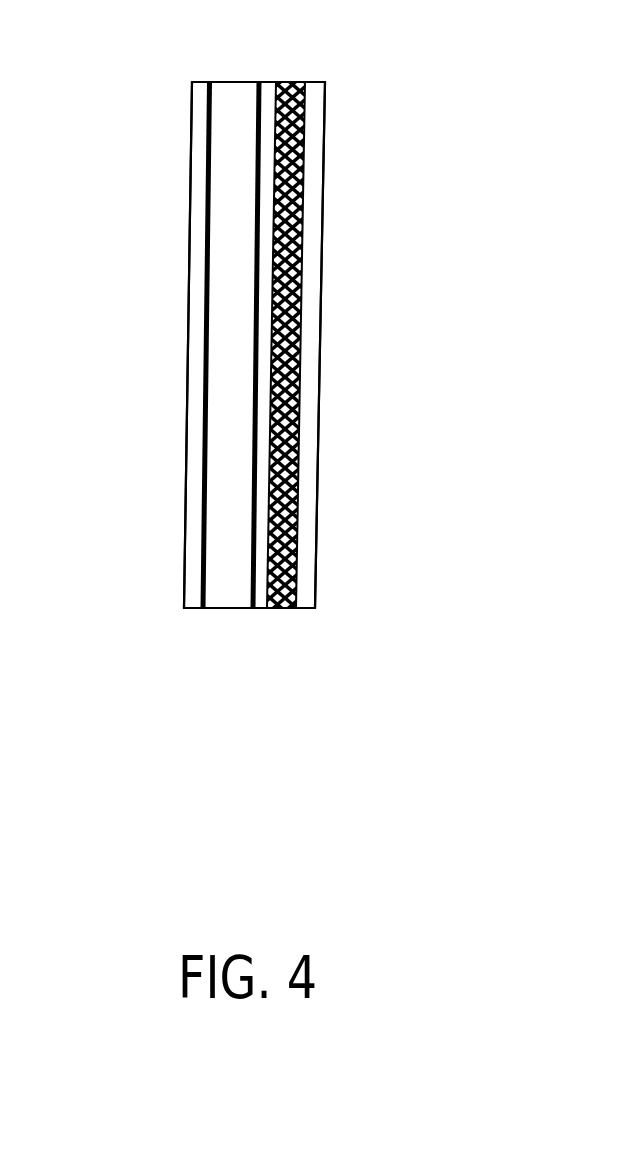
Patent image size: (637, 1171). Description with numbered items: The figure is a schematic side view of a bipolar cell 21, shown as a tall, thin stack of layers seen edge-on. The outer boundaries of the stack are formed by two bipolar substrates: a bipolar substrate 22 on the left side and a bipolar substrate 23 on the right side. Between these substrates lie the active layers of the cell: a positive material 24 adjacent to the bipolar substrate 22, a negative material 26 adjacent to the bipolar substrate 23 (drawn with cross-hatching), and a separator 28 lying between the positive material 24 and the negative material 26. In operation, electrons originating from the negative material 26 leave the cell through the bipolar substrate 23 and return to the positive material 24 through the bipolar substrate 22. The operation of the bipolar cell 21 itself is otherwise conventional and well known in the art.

The bipolar cell 21 is at (518, 265).
The bipolar substrate 22 is at (191, 173).
The bipolar substrate 23 is at (325, 152).
The positive material 24 is at (230, 88).
The negative material 26 is at (290, 88).
The separator 28 is at (262, 598).